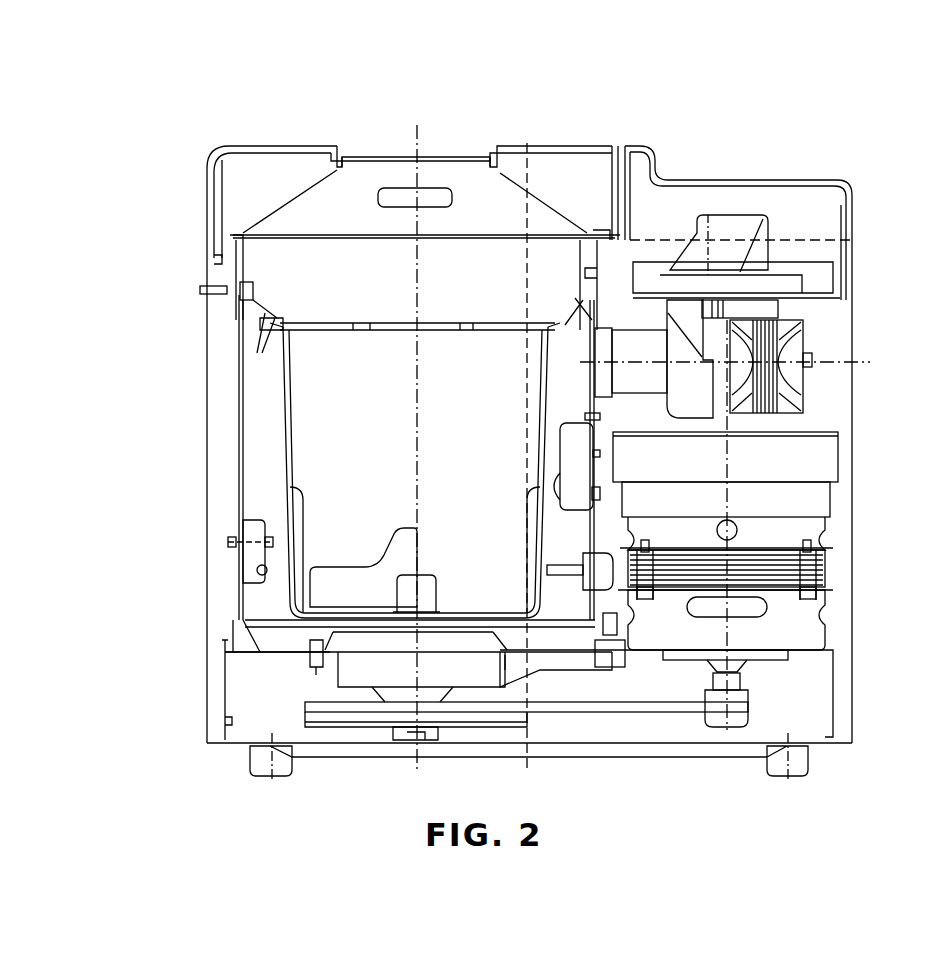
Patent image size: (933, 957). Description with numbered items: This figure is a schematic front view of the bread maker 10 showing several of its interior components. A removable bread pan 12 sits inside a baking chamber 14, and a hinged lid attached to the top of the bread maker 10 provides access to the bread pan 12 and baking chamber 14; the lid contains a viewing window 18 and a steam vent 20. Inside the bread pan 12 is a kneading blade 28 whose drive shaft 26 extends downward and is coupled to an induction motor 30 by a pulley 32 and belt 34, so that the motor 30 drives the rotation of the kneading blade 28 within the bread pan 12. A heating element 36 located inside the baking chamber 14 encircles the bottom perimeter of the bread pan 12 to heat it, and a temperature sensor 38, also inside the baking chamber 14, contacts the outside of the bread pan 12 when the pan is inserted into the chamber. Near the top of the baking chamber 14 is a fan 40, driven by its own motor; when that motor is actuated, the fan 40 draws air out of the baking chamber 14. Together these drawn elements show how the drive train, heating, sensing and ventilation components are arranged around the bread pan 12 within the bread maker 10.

The bread maker 10 is at (737, 140).
The bread pan 12 is at (283, 376).
The baking chamber 14 is at (262, 421).
The viewing window 18 is at (437, 152).
The steam vent 20 is at (397, 195).
The drive shaft 26 is at (330, 638).
The kneading blade 28 is at (330, 587).
The induction motor 30 is at (802, 630).
The pulley 32 is at (460, 723).
The belt 34 is at (677, 715).
The heating element 36 is at (567, 566).
The temperature sensor 38 is at (578, 572).
The fan 40 is at (717, 370).